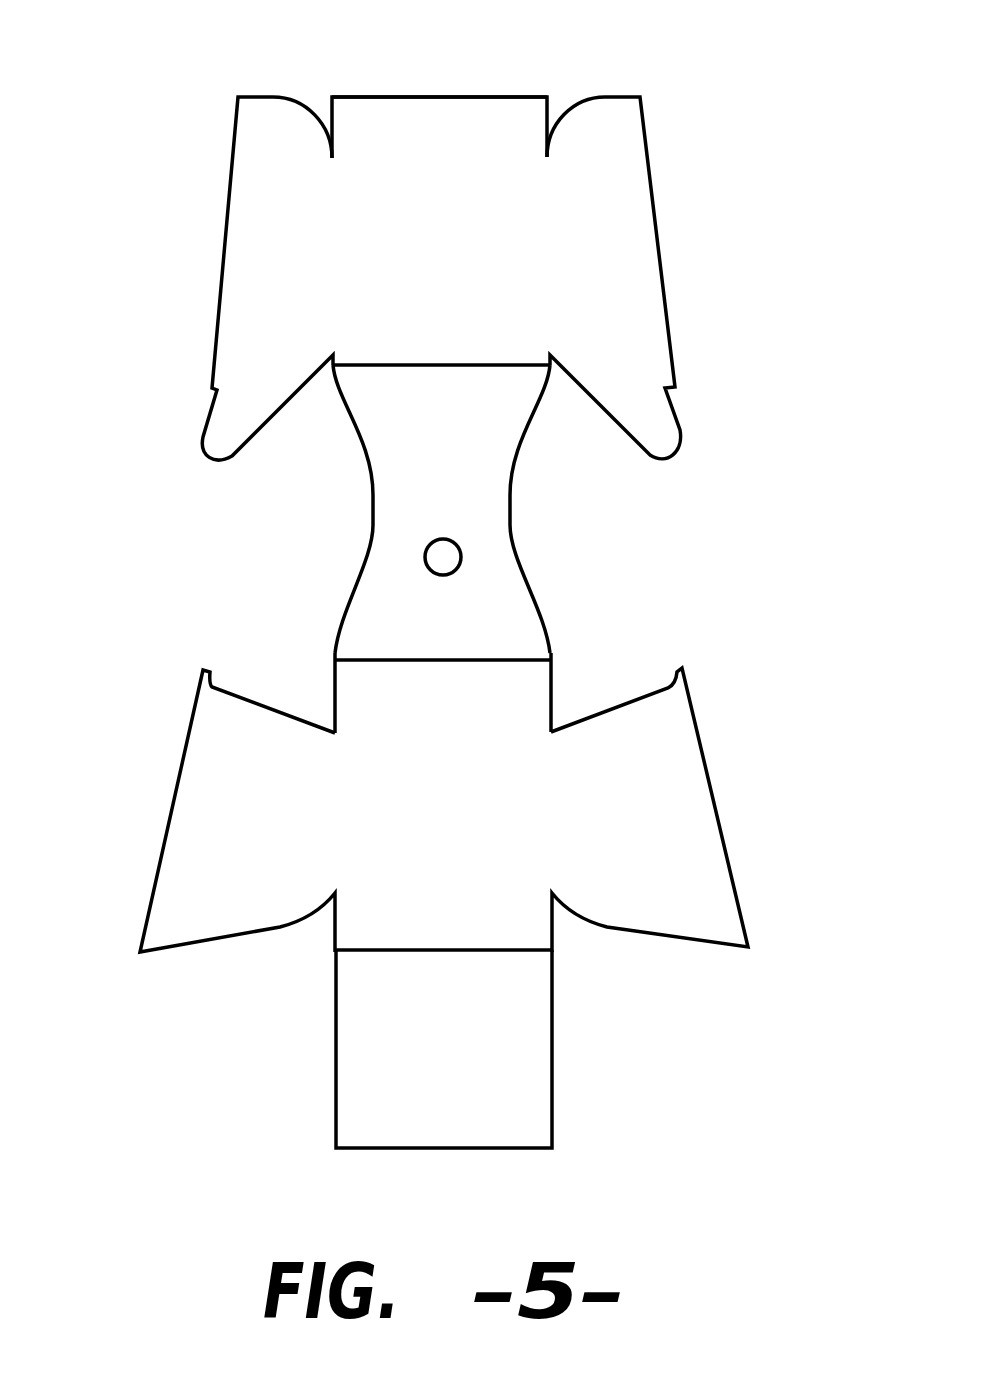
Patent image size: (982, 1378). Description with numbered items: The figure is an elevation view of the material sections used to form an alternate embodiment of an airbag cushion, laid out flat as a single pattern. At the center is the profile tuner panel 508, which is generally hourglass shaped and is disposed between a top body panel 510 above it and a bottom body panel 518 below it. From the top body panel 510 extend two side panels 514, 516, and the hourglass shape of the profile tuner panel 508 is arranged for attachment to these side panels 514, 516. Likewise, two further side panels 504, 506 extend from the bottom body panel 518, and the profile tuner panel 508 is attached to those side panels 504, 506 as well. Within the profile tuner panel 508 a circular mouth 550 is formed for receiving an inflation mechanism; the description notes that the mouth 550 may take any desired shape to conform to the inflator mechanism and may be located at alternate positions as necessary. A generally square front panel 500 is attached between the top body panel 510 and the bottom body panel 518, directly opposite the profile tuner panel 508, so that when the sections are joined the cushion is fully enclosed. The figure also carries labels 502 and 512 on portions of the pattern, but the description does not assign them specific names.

The front panel 500 is at (530, 1098).
The body panel 502 is at (502, 683).
The side panel 504 is at (703, 870).
The side panel 506 is at (183, 873).
The profile tuner panel 508 is at (382, 435).
The top body panel 510 is at (402, 95).
The top panel 512 is at (457, 127).
The side panel 514 is at (632, 277).
The side panel 516 is at (248, 280).
The bottom body panel 518 is at (528, 923).
The mouth 550 is at (460, 540).